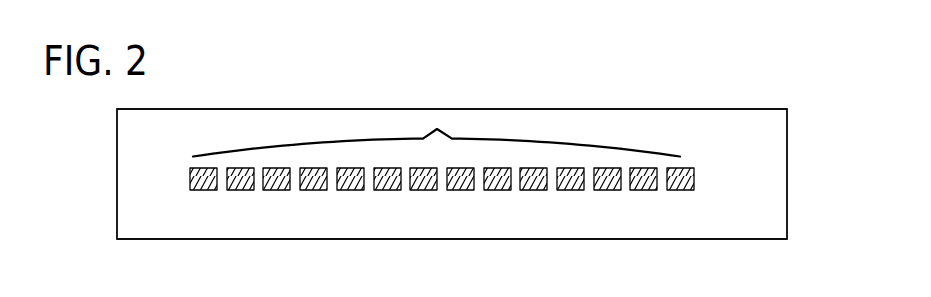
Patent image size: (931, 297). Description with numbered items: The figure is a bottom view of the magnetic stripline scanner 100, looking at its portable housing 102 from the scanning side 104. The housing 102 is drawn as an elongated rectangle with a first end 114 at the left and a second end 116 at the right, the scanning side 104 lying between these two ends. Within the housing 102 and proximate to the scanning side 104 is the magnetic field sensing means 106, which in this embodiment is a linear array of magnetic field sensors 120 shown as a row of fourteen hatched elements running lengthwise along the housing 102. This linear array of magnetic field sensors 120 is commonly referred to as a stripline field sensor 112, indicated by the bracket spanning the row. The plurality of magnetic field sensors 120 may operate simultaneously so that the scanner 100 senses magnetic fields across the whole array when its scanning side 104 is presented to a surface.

The magnetic stripline scanner 100 is at (597, 90).
The portable housing 102 is at (168, 109).
The scanning side 104 is at (700, 133).
The magnetic field sensing means 106 is at (485, 101).
The stripline field sensor 112 is at (436, 148).
The first end 114 is at (117, 185).
The second end 116 is at (788, 190).
The magnetic field sensors 120 is at (233, 192).